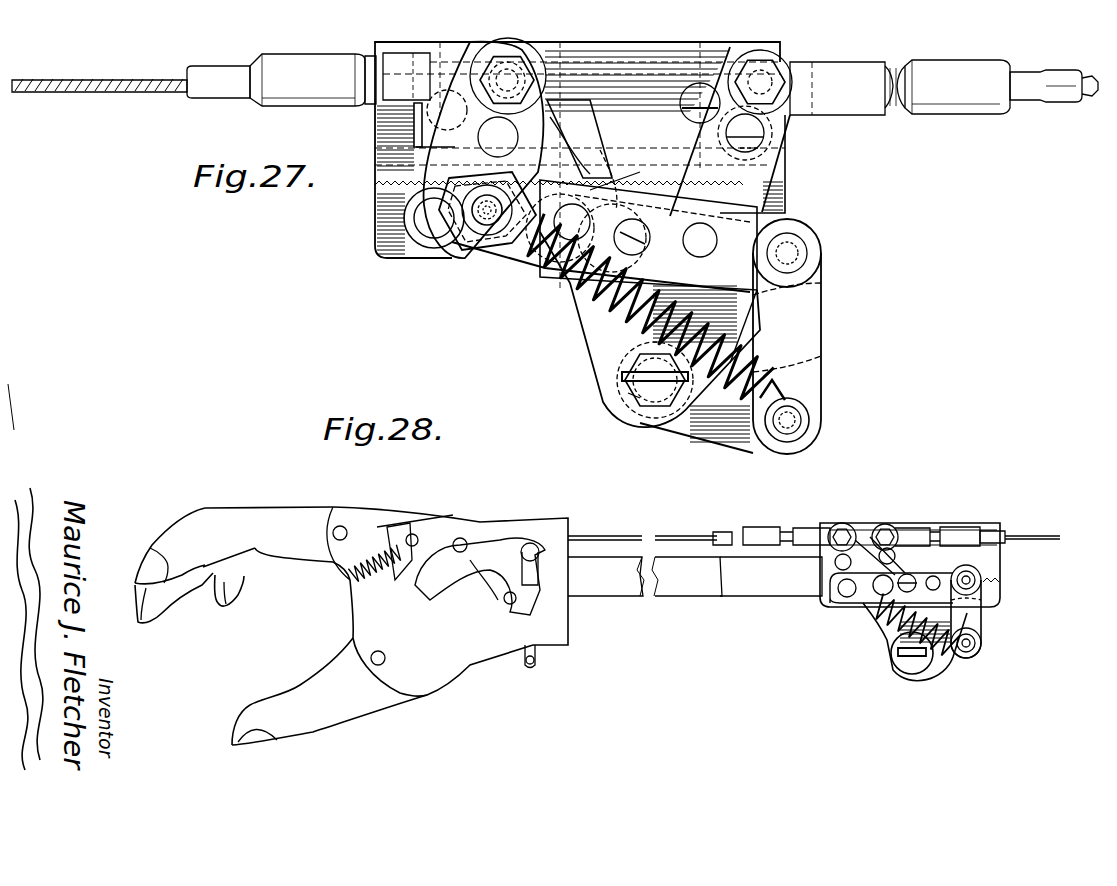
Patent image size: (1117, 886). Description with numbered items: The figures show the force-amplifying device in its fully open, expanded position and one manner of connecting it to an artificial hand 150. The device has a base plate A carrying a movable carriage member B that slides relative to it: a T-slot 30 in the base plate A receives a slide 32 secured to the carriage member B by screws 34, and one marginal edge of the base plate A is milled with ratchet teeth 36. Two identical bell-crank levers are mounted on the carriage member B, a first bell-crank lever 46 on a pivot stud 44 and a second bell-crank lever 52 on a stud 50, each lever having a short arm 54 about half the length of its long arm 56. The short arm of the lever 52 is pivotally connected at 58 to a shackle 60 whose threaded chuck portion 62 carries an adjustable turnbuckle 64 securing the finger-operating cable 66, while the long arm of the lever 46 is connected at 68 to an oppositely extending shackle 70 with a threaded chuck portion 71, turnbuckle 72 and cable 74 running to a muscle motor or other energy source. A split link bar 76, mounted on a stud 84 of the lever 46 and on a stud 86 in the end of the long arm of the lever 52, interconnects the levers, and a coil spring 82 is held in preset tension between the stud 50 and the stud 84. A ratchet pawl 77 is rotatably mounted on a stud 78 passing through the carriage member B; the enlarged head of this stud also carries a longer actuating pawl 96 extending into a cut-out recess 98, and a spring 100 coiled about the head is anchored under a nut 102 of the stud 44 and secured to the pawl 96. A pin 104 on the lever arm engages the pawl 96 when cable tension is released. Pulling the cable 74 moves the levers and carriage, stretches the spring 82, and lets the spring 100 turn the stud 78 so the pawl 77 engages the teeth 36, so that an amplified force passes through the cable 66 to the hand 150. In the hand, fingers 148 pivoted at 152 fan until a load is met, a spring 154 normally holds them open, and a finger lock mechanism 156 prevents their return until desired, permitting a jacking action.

In FIG. 27, the finger-operating cable 66 is at (132, 80).
In FIG. 28, the finger-operating cable 66 is at (617, 537).
In FIG. 27, the adjustable turnbuckle 64 is at (280, 64).
In FIG. 27, the threaded chuck portion 62 is at (370, 55).
In FIG. 27, the shackle 60 is at (398, 62).
In FIG. 27, the screws 34 is at (455, 70).
In FIG. 27, the pivot connection 58 is at (503, 58).
In FIG. 28, the pivot connection 58 is at (845, 528).
In FIG. 27, the carriage member B is at (606, 49).
In FIG. 28, the carriage member B is at (867, 636).
In FIG. 27, the pivot connection 68 is at (772, 76).
In FIG. 28, the pivot connection 68 is at (888, 528).
In FIG. 27, the shackle 70 is at (850, 70).
In FIG. 27, the threaded chuck portion 71 is at (898, 66).
In FIG. 27, the turnbuckle 72 is at (945, 72).
In FIG. 27, the cable 74 is at (1040, 78).
In FIG. 28, the cable 74 is at (1030, 536).
In FIG. 27, the T-slot 30 is at (376, 116).
In FIG. 27, the slide 32 is at (415, 140).
In FIG. 27, the short arm 54 is at (376, 176).
In FIG. 27, the ratchet teeth 36 is at (378, 206).
In FIG. 27, the base plate A is at (368, 237).
In FIG. 28, the base plate A is at (1006, 584).
In FIG. 27, the cut-out recess 98 is at (590, 100).
In FIG. 27, the actuating pawl 96 is at (565, 128).
In FIG. 27, the ratchet pawl 77 is at (605, 152).
In FIG. 27, the stud 78 is at (612, 172).
In FIG. 27, the long arm 56 is at (772, 128).
In FIG. 27, the pin 104 is at (760, 146).
In FIG. 27, the stud 86 is at (808, 254).
In FIG. 27, the stud 50 is at (450, 250).
In FIG. 27, the second bell-crank lever 52 is at (501, 273).
In FIG. 27, the coil spring 82 is at (574, 290).
In FIG. 28, the coil spring 82 is at (888, 636).
In FIG. 27, the spring 100 is at (648, 270).
In FIG. 27, the bell-crank lever 46 is at (579, 346).
In FIG. 27, the split link bar 76 is at (812, 322).
In FIG. 28, the split link bar 76 is at (975, 618).
In FIG. 27, the nut 102 is at (617, 402).
In FIG. 27, the pivot stud 44 is at (645, 410).
In FIG. 28, the pivot stud 44 is at (905, 668).
In FIG. 27, the stud 84 is at (810, 419).
In FIG. 28, the fingers 148 is at (288, 520).
In FIG. 28, the finger pivot 152 is at (346, 530).
In FIG. 28, the artificial hand 150 is at (438, 516).
In FIG. 28, the finger lock mechanism 156 is at (505, 544).
In FIG. 28, the spring 154 is at (375, 582).